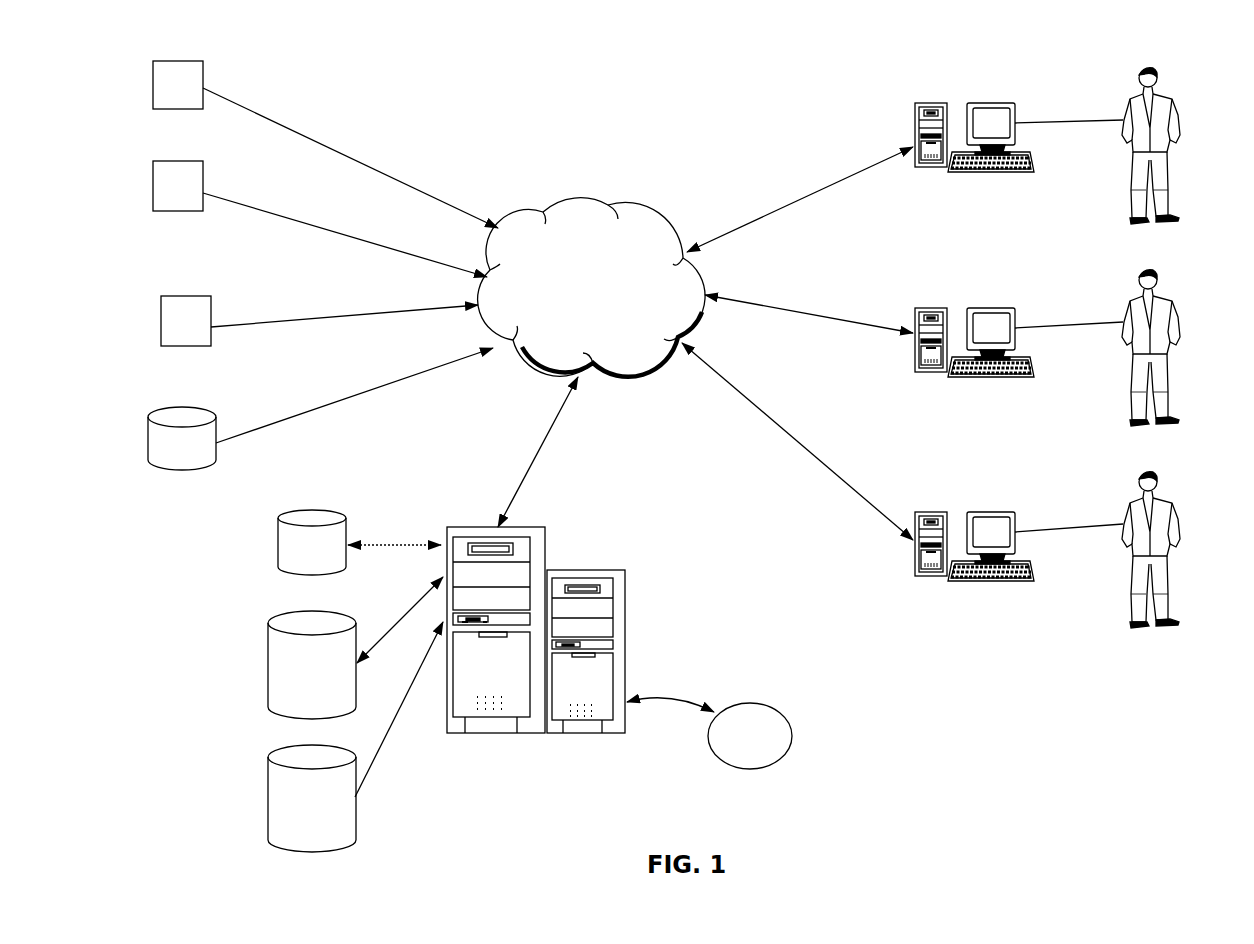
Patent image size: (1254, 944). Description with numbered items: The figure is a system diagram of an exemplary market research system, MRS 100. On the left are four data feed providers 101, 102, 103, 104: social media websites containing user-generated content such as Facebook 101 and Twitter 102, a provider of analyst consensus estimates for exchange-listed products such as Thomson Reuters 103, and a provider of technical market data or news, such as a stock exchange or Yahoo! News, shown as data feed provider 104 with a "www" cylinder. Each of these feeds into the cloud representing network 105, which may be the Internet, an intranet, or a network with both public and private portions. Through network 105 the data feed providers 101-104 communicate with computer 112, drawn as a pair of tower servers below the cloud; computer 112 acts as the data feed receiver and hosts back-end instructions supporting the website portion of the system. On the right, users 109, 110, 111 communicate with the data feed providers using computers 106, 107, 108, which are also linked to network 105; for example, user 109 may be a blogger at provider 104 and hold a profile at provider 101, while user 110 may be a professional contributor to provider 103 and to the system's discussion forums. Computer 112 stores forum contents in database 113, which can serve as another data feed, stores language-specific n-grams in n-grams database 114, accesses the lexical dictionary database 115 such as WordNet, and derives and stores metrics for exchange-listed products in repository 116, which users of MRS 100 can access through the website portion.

The market research system 100 is at (905, 695).
The data feed provider 101 is at (152, 79).
The data feed provider 102 is at (152, 183).
The data feed provider 103 is at (160, 320).
The data feed provider 104 is at (146, 450).
The network 105 is at (663, 213).
The computer 106 is at (927, 102).
The computer 107 is at (974, 324).
The computer 108 is at (974, 527).
The user 109 is at (1150, 67).
The user 110 is at (1169, 333).
The user 111 is at (1169, 535).
The computer 112 is at (626, 565).
The database 113 is at (275, 550).
The n-grams database 114 is at (265, 670).
The lexical dictionary database 115 is at (265, 803).
The repository 116 is at (792, 735).